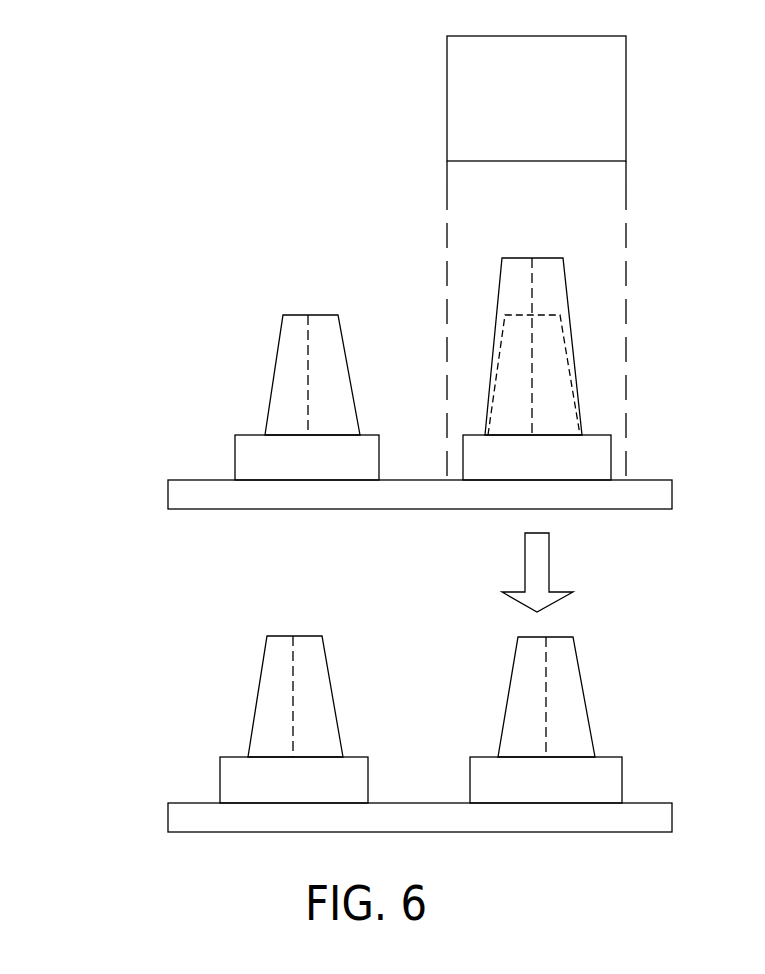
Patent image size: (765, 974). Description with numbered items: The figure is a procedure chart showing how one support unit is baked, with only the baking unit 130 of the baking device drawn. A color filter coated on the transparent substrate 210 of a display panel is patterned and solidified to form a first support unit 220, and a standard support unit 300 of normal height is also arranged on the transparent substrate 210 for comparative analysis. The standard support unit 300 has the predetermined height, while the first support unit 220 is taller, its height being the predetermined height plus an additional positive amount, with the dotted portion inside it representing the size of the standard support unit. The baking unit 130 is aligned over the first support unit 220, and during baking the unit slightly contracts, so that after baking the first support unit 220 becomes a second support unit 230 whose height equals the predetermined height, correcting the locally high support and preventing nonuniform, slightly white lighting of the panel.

The baking unit 130 is at (447, 145).
The transparent substrate 210 is at (168, 489).
The first support unit 220 is at (493, 353).
The second support unit 230 is at (510, 698).
The standard support unit 300 is at (265, 423).